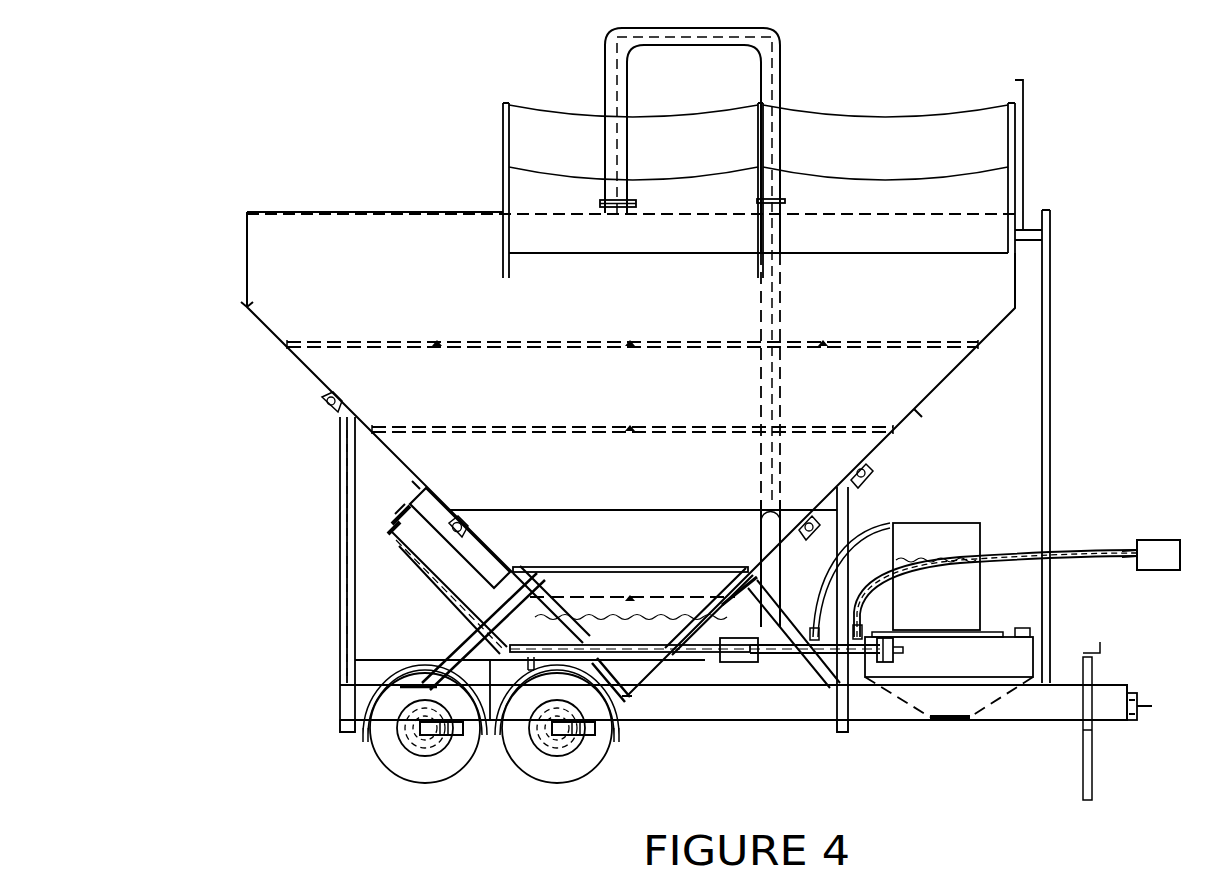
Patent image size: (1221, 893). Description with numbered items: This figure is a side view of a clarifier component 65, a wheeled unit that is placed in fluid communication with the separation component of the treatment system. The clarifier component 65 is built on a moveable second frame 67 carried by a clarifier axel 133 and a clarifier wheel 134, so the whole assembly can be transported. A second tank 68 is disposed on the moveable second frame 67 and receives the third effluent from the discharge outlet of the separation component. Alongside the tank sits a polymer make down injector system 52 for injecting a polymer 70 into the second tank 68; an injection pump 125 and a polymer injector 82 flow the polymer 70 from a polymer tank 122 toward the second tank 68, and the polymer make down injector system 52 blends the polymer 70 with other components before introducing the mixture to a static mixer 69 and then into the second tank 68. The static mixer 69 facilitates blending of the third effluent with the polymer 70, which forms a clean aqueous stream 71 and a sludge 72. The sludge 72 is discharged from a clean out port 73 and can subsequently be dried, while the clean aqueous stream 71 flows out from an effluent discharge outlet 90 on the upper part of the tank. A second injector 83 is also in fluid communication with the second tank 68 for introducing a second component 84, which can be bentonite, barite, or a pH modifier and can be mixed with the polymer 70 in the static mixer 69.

The clarifier component 65 is at (185, 178).
The moveable second frame 67 is at (1063, 705).
The second tank 68 is at (283, 318).
The clean aqueous stream 71 is at (605, 72).
The effluent discharge outlet 90 is at (600, 204).
The polymer injector 82 is at (403, 535).
The polymer 70 is at (440, 587).
The sludge 72 is at (590, 633).
The clean out port 73 is at (633, 700).
The static mixer 69 is at (740, 662).
The clarifier wheel 134 is at (425, 768).
The clarifier axel 133 is at (415, 740).
The injection pump 125 is at (1033, 657).
The polymer make down injector system 52 is at (1032, 607).
The polymer tank 122 is at (980, 552).
The second injector 83 is at (1160, 570).
The second component 84 is at (1122, 555).